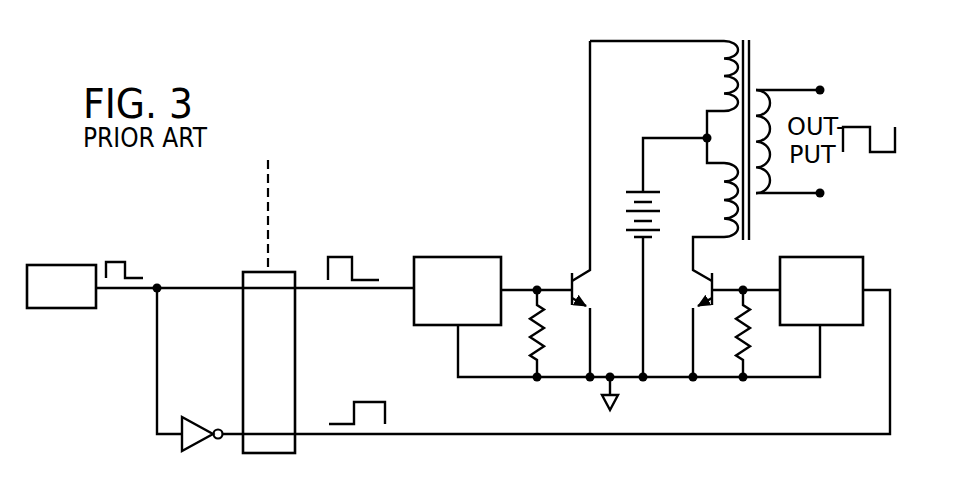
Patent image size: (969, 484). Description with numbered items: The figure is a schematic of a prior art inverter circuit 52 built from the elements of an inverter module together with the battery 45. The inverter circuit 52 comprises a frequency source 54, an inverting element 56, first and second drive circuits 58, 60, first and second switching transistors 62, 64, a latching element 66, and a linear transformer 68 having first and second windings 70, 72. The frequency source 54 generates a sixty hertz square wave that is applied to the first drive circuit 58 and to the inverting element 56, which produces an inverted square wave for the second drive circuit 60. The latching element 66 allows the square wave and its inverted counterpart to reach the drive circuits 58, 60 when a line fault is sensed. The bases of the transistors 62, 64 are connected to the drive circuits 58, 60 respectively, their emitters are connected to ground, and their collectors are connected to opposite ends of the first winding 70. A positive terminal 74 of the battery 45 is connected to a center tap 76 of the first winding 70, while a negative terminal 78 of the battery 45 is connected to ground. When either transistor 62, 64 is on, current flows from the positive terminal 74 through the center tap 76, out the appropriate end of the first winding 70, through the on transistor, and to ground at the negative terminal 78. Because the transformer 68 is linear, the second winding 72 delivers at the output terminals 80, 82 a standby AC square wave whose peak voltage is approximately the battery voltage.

The battery 45 is at (705, 126).
The inverter circuit 52 is at (263, 195).
The frequency source 54 is at (85, 265).
The inverting element 56 is at (194, 427).
The first drive circuit 58 is at (454, 246).
The second drive circuit 60 is at (835, 358).
The first switching transistor 62 is at (586, 273).
The second switching transistor 64 is at (699, 275).
The latching element 66 is at (257, 272).
The linear transformer 68 is at (749, 52).
The first winding 70 is at (723, 80).
The second winding 72 is at (768, 124).
The positive terminal 74 is at (641, 191).
The center tap 76 is at (705, 136).
The negative terminal 78 is at (641, 244).
The output terminal 80 is at (820, 90).
The output terminal 82 is at (820, 193).